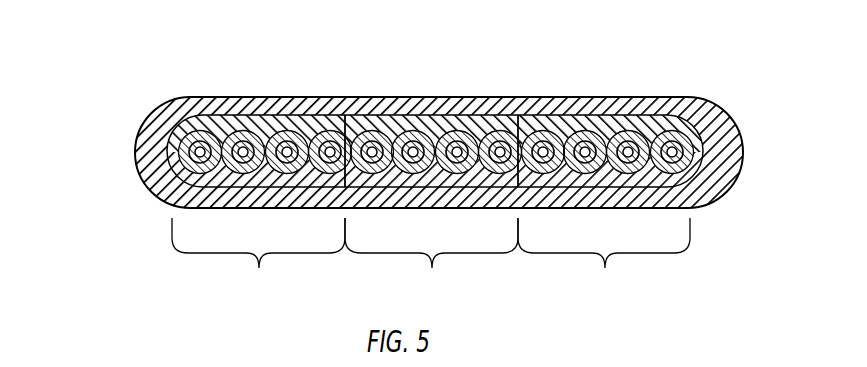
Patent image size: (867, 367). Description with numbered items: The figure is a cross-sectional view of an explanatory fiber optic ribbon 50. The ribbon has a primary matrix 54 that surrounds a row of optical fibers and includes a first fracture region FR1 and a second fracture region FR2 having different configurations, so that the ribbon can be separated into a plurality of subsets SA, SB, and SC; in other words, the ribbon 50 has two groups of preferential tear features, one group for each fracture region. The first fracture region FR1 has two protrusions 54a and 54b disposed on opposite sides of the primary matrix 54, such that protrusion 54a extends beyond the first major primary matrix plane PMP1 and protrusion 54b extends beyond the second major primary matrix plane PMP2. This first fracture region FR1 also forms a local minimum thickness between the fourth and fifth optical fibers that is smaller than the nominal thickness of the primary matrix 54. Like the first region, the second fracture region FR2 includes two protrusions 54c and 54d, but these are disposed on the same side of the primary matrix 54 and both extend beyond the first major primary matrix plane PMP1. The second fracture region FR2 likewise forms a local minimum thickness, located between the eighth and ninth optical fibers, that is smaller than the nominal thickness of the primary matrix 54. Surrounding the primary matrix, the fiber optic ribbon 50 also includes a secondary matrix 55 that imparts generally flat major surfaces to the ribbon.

The fiber optic ribbon 50 is at (104, 90).
The primary matrix 54 is at (687, 175).
The protrusion 54a is at (330, 101).
The protrusion 54b is at (374, 198).
The protrusion 54c is at (496, 100).
The protrusion 54d is at (549, 100).
The secondary matrix 55 is at (738, 139).
The first fracture region FR1 is at (349, 125).
The second fracture region FR2 is at (523, 125).
The first major primary matrix plane PMP1 is at (130, 117).
The second major primary matrix plane PMP2 is at (130, 185).
The subset SA is at (258, 260).
The subset SB is at (431, 260).
The subset SC is at (604, 260).